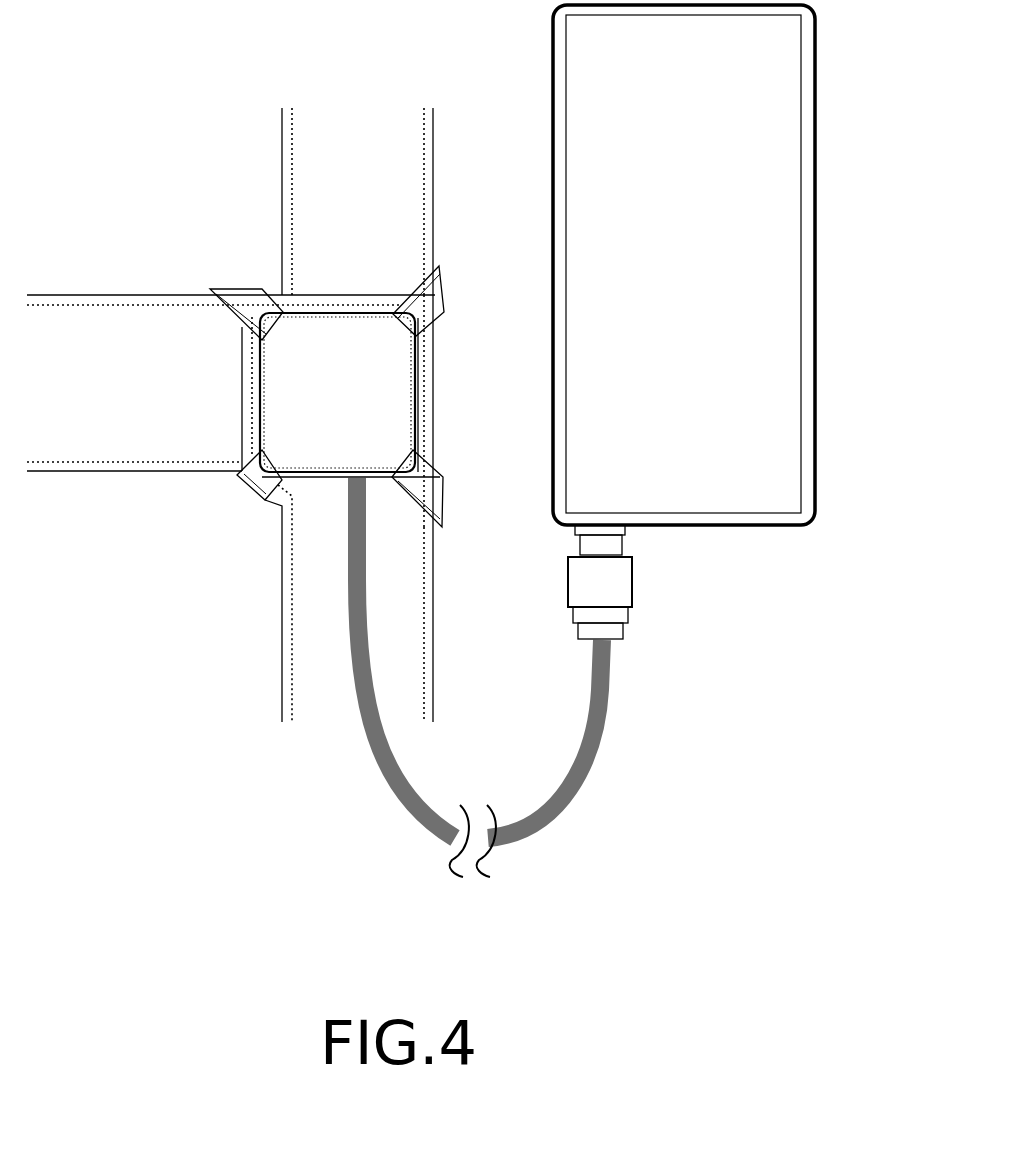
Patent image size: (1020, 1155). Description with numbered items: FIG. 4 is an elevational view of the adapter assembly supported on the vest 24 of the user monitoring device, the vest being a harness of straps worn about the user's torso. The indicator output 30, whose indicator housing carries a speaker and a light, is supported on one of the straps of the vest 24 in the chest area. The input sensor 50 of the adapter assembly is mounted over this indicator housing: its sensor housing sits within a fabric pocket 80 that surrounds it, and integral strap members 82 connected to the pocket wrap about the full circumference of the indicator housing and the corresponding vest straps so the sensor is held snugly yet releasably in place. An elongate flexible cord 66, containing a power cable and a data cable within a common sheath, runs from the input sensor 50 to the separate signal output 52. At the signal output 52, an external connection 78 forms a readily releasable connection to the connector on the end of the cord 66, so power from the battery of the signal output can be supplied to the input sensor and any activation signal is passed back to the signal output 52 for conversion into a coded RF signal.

The vest 24 is at (405, 183).
The indicator output 30 is at (425, 376).
The input sensor 50 is at (311, 371).
The signal output 52 is at (666, 477).
The flexible cord 66 is at (428, 832).
The external connection 78 is at (622, 533).
The fabric pocket 80 is at (320, 370).
The strap members 82 is at (257, 288).